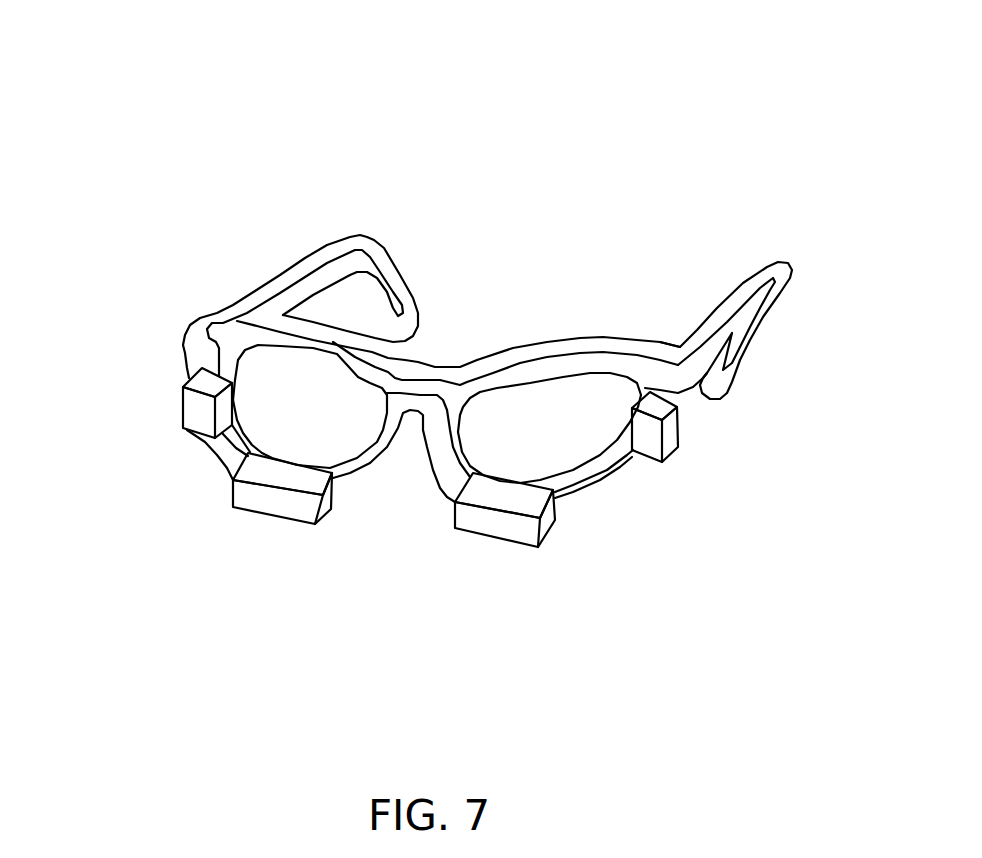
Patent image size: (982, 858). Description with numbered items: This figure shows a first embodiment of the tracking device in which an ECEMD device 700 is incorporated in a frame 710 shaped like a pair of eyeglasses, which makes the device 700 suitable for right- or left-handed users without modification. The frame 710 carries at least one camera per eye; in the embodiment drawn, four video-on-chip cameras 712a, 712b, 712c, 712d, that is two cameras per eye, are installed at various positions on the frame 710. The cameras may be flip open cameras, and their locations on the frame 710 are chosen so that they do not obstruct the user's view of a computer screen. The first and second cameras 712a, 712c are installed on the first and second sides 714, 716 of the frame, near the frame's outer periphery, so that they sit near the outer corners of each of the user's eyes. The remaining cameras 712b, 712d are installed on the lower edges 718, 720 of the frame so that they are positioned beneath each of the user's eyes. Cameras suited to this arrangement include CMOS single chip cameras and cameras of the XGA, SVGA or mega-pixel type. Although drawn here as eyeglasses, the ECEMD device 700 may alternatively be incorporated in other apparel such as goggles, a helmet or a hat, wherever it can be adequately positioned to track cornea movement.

The ECEMD device 700 is at (298, 112).
The frame 710 is at (353, 235).
The first camera 712a is at (183, 405).
The second camera 712b is at (273, 510).
The second camera 712c is at (655, 435).
The third camera 712d is at (530, 537).
The first side 714 is at (205, 442).
The second side 716 is at (605, 468).
The lower edge 718 is at (223, 465).
The lower edge 720 is at (453, 490).